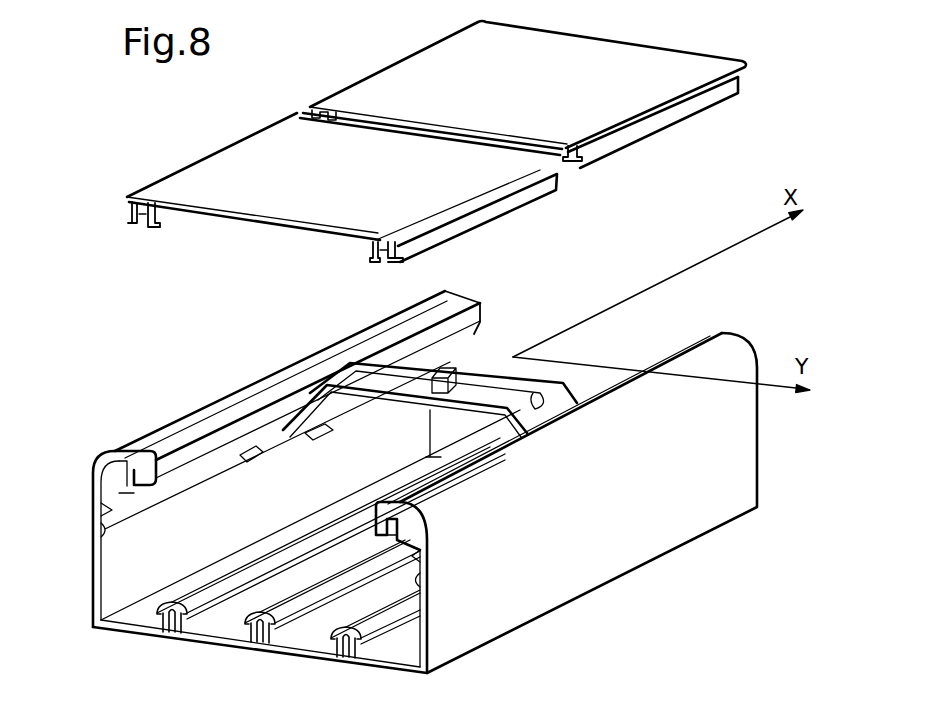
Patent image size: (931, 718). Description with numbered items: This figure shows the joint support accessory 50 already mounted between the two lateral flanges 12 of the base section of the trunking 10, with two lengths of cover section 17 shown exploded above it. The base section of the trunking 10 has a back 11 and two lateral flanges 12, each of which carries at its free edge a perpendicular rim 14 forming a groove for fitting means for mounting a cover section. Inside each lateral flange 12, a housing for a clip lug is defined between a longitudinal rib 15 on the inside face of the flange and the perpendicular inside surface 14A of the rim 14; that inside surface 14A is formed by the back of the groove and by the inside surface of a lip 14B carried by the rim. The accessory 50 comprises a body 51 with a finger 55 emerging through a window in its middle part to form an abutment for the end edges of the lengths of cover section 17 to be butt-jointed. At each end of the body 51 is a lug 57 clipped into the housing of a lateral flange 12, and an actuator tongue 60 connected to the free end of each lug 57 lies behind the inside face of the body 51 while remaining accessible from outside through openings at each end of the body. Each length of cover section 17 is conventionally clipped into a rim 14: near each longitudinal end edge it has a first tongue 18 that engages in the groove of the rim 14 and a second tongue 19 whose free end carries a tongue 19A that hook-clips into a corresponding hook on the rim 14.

The trunking 10 is at (388, 495).
The back 11 is at (200, 647).
The lateral flange 12 is at (92, 597).
The perpendicular rim 14 is at (148, 462).
The perpendicular inside surface 14A is at (130, 495).
The lip 14B is at (110, 512).
The longitudinal rib 15 is at (100, 530).
The length of cover section 17 is at (232, 166).
The first tongue 18 is at (128, 217).
The second tongue 19 is at (165, 223).
The tongue 19A is at (152, 232).
The accessory 50 is at (430, 394).
The body 51 is at (390, 405).
The finger 55 is at (447, 368).
The lug 57 is at (264, 460).
The actuator tongue 60 is at (323, 440).